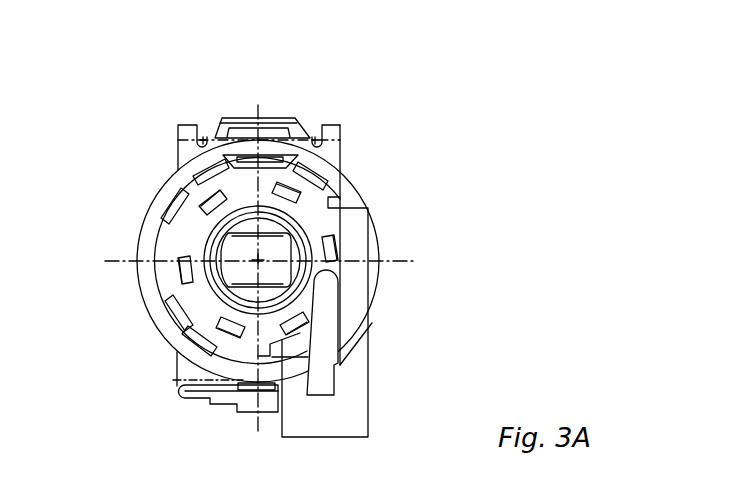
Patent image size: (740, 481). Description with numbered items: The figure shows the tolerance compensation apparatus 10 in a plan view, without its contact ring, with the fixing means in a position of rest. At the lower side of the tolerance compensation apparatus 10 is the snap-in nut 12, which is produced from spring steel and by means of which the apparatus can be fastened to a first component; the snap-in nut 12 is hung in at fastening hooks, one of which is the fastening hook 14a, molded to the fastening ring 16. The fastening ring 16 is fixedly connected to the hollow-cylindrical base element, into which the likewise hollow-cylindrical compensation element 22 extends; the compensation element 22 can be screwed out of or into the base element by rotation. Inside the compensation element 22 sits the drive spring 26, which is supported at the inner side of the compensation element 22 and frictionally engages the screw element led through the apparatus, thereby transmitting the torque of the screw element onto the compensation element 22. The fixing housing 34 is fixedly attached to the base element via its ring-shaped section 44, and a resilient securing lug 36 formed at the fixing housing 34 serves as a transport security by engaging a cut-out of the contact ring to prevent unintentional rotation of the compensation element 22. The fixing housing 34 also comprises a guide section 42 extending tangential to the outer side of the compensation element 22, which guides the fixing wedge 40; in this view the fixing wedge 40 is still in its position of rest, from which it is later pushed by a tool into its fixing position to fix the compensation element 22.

The tolerance compensation apparatus 10 is at (389, 82).
The snap-in nut 12 is at (343, 136).
The fastening hook 14a is at (248, 405).
The fastening ring 16 is at (158, 323).
The compensation element 22 is at (295, 212).
The drive spring 26 is at (208, 240).
The fixing housing 34 is at (372, 323).
The securing lug 36 is at (212, 363).
The fixing wedge 40 is at (323, 317).
The guide section 42 is at (369, 374).
The ring-shaped section 44 is at (212, 236).